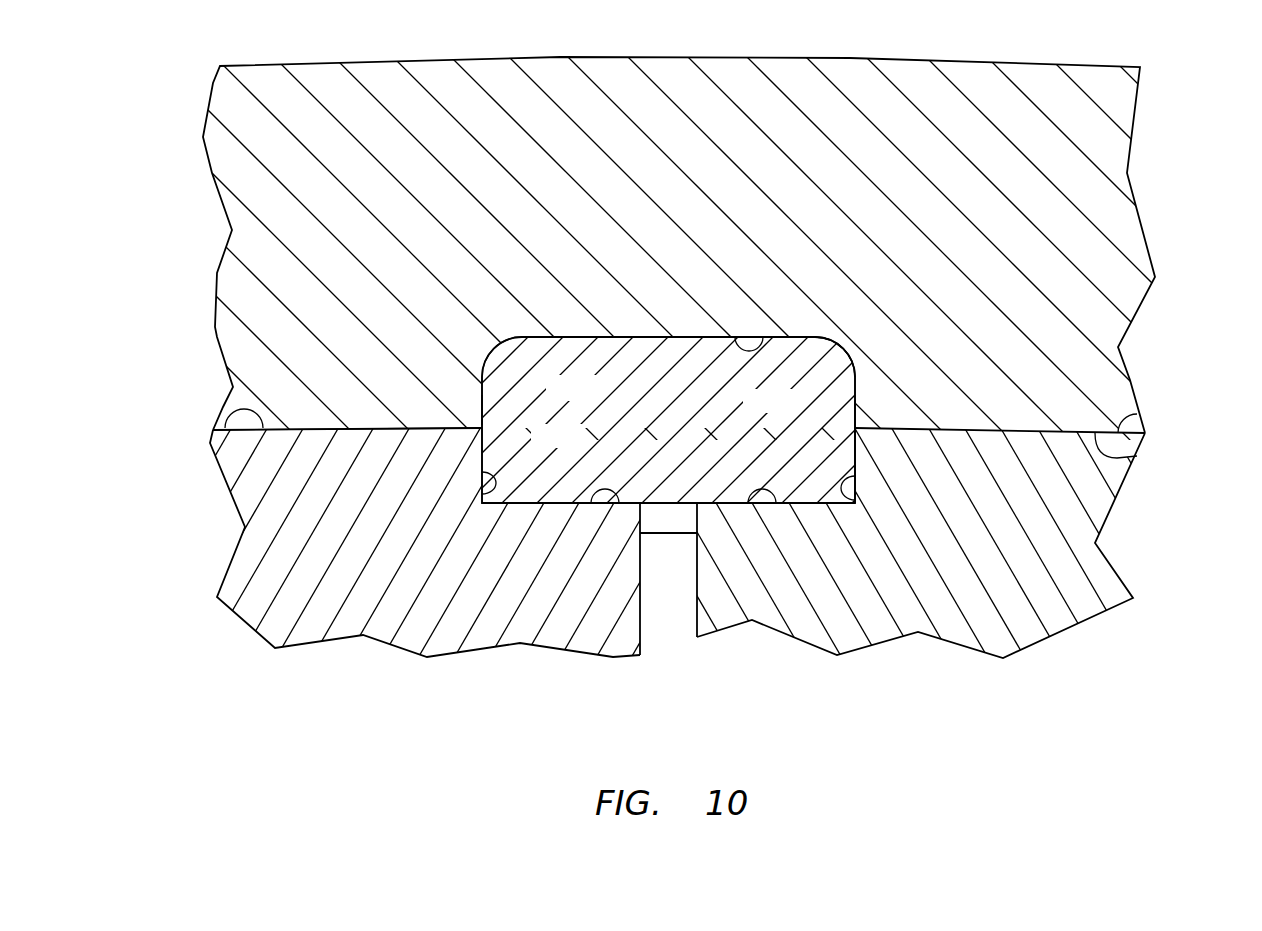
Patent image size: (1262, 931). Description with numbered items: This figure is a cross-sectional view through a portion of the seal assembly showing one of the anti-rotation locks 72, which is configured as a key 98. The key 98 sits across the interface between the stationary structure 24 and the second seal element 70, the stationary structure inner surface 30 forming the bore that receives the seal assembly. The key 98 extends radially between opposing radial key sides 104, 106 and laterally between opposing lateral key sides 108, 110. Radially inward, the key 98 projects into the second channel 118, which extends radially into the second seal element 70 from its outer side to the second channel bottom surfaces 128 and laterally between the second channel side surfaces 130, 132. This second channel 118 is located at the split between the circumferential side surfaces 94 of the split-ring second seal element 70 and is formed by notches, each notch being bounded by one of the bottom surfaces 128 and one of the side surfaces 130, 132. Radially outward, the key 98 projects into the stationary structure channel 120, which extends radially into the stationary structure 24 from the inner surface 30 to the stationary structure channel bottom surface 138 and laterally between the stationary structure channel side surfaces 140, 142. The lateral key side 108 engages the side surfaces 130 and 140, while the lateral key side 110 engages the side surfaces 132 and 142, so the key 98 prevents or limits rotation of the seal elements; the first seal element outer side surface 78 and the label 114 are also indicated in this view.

The stationary structure 24 is at (1143, 110).
The stationary structure inner surface 30 is at (1138, 456).
The second seal element 70 is at (185, 556).
The anti-rotation lock 72 is at (690, 379).
The key 98 is at (690, 379).
The first seal element outer side surface 78 is at (263, 427).
The circumferential side surfaces 94 is at (696, 615).
The radial key side 104 is at (692, 332).
The radial key side 106 is at (552, 337).
The lateral key side 108 is at (857, 392).
The lateral key side 110 is at (480, 392).
The corner 114 is at (891, 331).
The stationary structure channel 120 is at (852, 352).
The second channel 118 is at (862, 450).
The second channel bottom surfaces 128 is at (607, 505).
The second channel side surface 130 is at (853, 505).
The second channel side surface 132 is at (494, 482).
The stationary structure channel bottom surface 138 is at (762, 340).
The stationary structure channel side surface 140 is at (853, 417).
The stationary structure channel side surface 142 is at (483, 410).